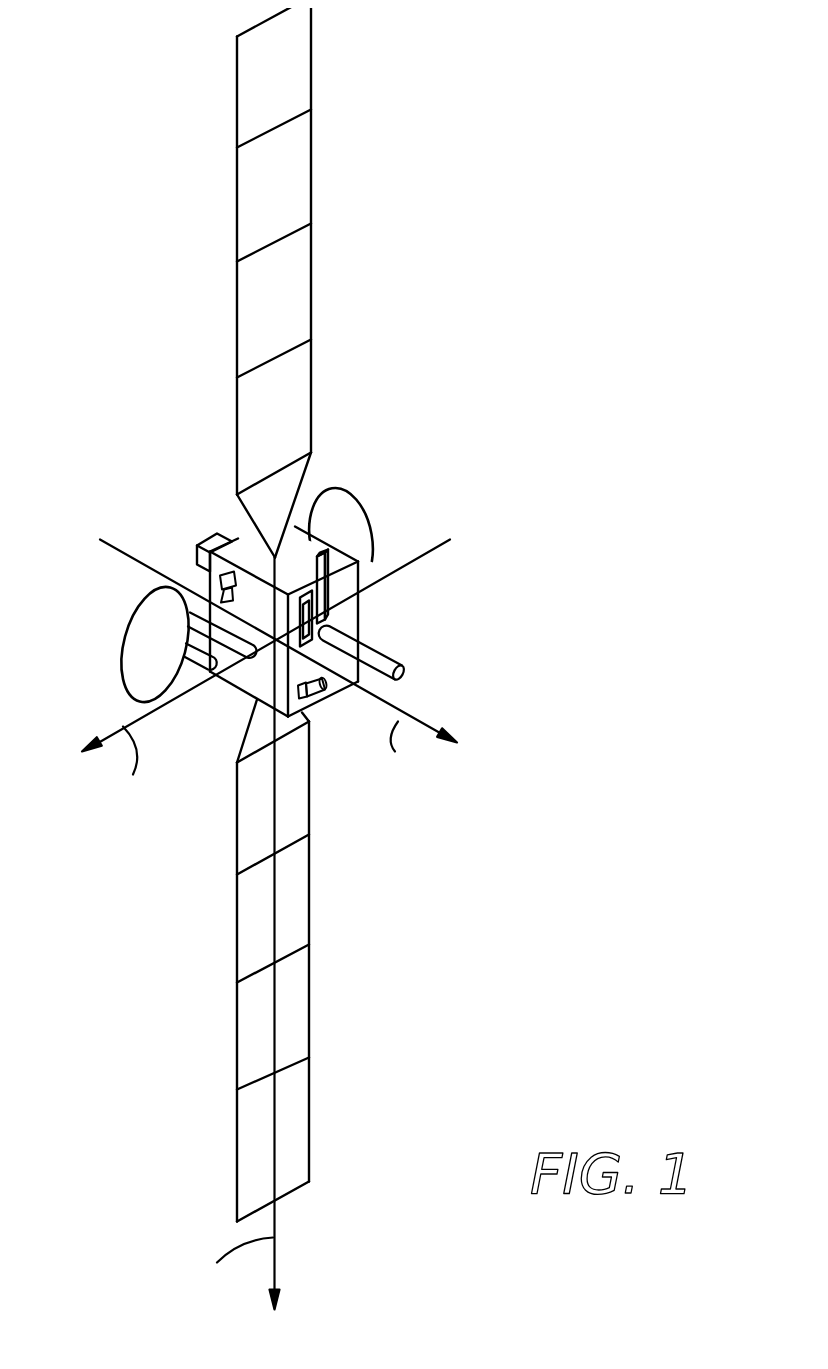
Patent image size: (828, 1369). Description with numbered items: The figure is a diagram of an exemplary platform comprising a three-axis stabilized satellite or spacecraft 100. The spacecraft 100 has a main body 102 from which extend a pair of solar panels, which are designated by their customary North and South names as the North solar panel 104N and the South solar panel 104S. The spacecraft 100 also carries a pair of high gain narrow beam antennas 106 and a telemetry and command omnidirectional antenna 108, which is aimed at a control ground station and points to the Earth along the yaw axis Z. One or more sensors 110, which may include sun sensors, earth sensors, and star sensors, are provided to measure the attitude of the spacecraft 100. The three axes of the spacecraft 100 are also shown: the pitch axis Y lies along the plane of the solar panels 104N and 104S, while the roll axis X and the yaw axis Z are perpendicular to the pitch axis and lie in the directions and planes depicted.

The spacecraft 100 is at (400, 228).
The main body 102 is at (347, 615).
The North solar panel 104N is at (288, 180).
The South solar panel 104S is at (298, 1005).
The high gain narrow beam antenna 106 is at (357, 500).
The telemetry and command omnidirectional antenna 108 is at (383, 662).
The sensor 110 is at (227, 575).